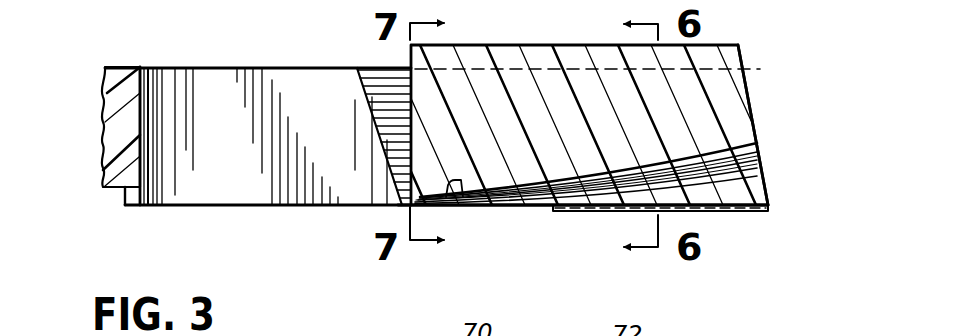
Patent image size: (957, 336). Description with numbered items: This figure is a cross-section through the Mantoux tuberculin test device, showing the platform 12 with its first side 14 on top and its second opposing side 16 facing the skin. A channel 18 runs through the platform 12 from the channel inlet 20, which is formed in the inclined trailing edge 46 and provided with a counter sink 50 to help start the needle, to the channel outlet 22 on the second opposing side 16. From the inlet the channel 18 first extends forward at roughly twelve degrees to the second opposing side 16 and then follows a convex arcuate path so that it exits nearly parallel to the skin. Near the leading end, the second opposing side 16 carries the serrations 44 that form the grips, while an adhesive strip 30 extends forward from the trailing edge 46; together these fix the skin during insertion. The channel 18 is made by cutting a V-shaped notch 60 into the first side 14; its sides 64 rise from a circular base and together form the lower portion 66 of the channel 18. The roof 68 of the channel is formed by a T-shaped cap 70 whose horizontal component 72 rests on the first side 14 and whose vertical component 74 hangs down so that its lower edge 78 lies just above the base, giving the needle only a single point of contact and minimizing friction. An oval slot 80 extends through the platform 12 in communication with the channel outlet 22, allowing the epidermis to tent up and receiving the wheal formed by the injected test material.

The platform 12 is at (203, 245).
The first side 14 is at (240, 38).
The second opposing side 16 is at (542, 203).
The channel 18 is at (600, 207).
The channel inlet 20 is at (745, 155).
The channel outlet 22 is at (490, 203).
The adhesive strip 30 is at (720, 212).
The serrations 44 is at (115, 200).
The trailing edge 46 is at (748, 95).
The counter sink 50 is at (765, 163).
The V-shaped notch 60 is at (385, 88).
The sides 64 is at (389, 110).
The lower portion 66 is at (410, 205).
The roof 68 is at (448, 198).
The T-shaped cap 70 is at (492, 17).
The horizontal component 72 is at (537, 55).
The vertical component 74 is at (680, 95).
The lower edge 78 is at (505, 203).
The oval slot 80 is at (288, 80).